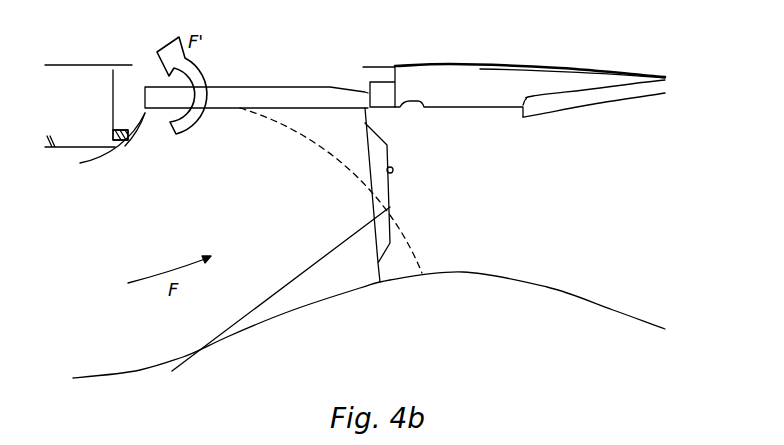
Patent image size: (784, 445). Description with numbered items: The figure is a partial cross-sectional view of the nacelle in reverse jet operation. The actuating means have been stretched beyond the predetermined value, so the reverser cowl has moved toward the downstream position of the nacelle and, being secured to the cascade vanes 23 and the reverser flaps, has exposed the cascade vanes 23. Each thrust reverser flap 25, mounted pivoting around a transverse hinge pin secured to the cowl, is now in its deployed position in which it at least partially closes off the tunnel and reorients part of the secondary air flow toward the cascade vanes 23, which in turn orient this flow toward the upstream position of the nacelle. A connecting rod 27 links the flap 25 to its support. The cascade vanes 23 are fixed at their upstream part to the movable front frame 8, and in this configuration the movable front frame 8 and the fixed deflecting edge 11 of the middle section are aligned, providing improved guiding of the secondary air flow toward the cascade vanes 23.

The movable front frame 8 is at (142, 121).
The fixed deflecting edge 11 is at (97, 166).
The cascade vanes 23 is at (255, 84).
The thrust reverser flap 25 is at (388, 153).
The connecting rod 27 is at (344, 244).